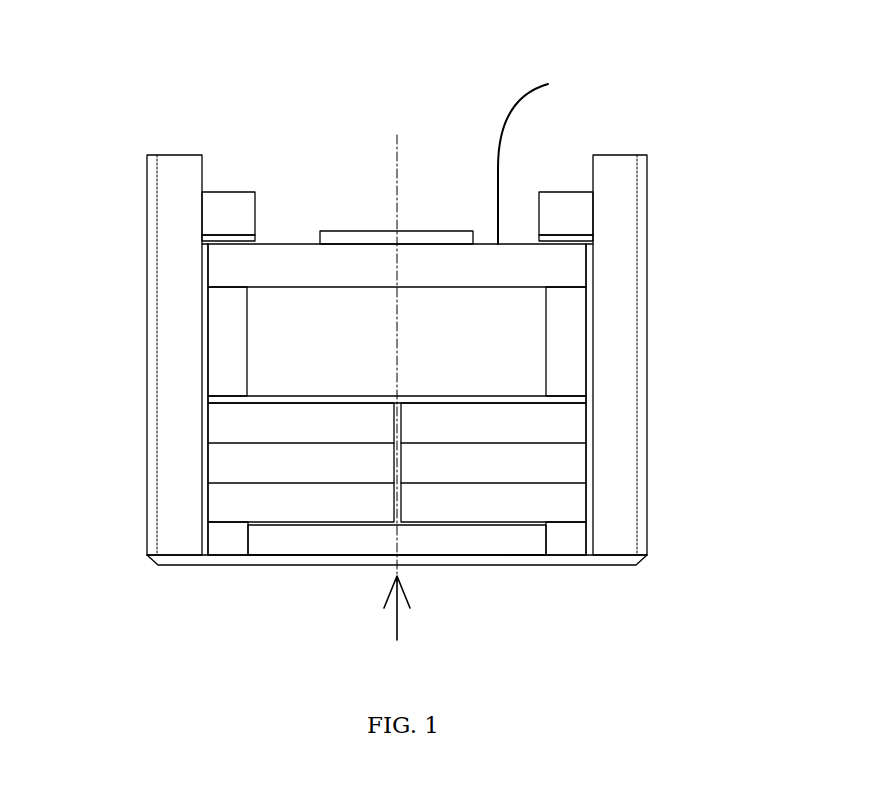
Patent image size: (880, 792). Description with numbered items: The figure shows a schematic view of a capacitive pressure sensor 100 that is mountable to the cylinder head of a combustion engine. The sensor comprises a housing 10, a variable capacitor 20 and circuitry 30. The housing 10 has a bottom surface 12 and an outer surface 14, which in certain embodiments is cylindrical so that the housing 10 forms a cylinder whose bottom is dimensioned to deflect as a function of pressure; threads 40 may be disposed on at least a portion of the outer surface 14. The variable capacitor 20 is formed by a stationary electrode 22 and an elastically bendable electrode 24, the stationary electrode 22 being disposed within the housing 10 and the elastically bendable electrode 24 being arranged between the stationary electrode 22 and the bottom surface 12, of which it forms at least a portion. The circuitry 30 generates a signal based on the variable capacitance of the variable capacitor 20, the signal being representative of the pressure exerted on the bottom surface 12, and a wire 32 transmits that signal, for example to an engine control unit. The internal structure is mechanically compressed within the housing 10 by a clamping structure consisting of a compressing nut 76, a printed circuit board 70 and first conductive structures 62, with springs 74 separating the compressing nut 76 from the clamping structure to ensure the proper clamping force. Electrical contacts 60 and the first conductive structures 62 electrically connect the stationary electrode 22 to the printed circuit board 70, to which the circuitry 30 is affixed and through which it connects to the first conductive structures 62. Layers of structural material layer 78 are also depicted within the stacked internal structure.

The capacitive pressure sensor 100 is at (255, 127).
The housing 10 is at (169, 361).
The bottom surface 12 is at (508, 565).
The outer surface 14 is at (147, 342).
The variable capacitor 20 is at (402, 548).
The stationary electrode 22 is at (295, 558).
The elastically bendable electrode 24 is at (452, 558).
The circuitry 30 is at (370, 231).
The wire 32 is at (500, 128).
The threads 40 is at (157, 413).
The electrical contacts 60 is at (300, 398).
The first conductive structures 62 is at (219, 350).
The printed circuit board 70 is at (375, 275).
The springs 74 is at (256, 236).
The compressing nut 76 is at (220, 221).
The structural material layer 78 is at (475, 431).